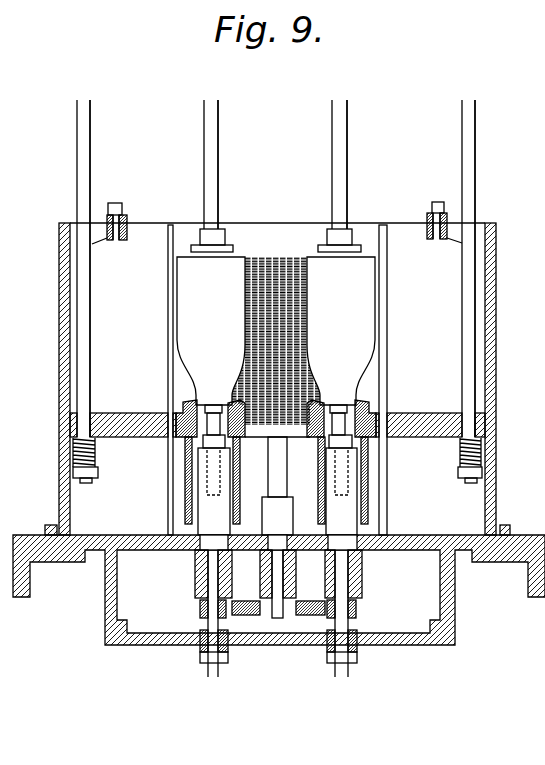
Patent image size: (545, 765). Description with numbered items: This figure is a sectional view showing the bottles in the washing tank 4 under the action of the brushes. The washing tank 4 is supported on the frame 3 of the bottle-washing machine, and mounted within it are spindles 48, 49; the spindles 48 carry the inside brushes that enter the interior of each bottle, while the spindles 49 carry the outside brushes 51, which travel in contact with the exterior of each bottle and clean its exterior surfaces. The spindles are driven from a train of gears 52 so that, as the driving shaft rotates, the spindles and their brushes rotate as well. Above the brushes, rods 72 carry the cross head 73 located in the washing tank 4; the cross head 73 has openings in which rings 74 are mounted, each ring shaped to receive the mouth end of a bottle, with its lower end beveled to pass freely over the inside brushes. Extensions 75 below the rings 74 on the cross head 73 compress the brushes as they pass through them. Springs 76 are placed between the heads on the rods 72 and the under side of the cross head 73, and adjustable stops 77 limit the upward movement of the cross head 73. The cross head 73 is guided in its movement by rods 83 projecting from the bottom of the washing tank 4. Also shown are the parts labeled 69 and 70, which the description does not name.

The frame 3 is at (279, 594).
The washing tank 4 is at (277, 240).
The spindle 48 is at (277, 541).
The spindle 49 is at (277, 527).
The brush 51 is at (305, 322).
The train of gears 52 is at (234, 619).
The rod 69 is at (218, 169).
The flange 70 is at (235, 249).
The rod 72 is at (91, 336).
The cross head 73 is at (108, 414).
The ring 74 is at (186, 400).
The extension 75 is at (186, 465).
The spring 76 is at (95, 449).
The adjustable stop 77 is at (128, 213).
The guide rod 83 is at (168, 297).